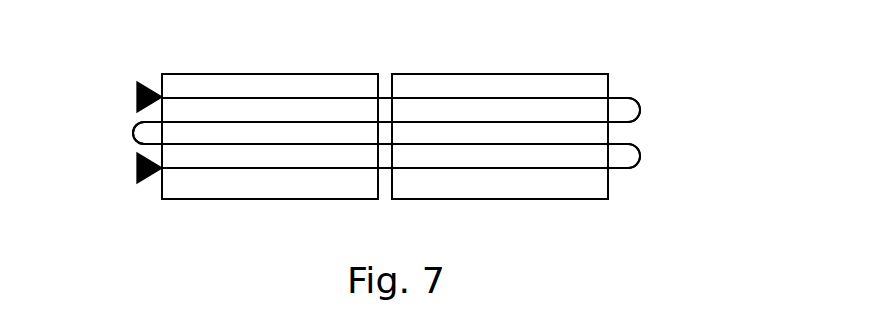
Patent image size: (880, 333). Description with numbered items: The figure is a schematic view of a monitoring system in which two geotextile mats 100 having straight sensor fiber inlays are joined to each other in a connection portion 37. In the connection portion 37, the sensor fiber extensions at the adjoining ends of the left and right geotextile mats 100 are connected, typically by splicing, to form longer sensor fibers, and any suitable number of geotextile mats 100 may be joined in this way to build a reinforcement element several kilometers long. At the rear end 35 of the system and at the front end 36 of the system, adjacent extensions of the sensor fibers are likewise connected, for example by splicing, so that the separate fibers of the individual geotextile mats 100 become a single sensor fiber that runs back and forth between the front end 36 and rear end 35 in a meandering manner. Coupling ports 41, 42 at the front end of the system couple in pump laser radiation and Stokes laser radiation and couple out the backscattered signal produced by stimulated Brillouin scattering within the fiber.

The geotextile mat 100 is at (262, 74).
The connection portion 37 is at (386, 66).
The rear end 35 is at (640, 110).
The front end 36 is at (133, 127).
The coupling port 41 is at (138, 82).
The coupling port 42 is at (138, 175).